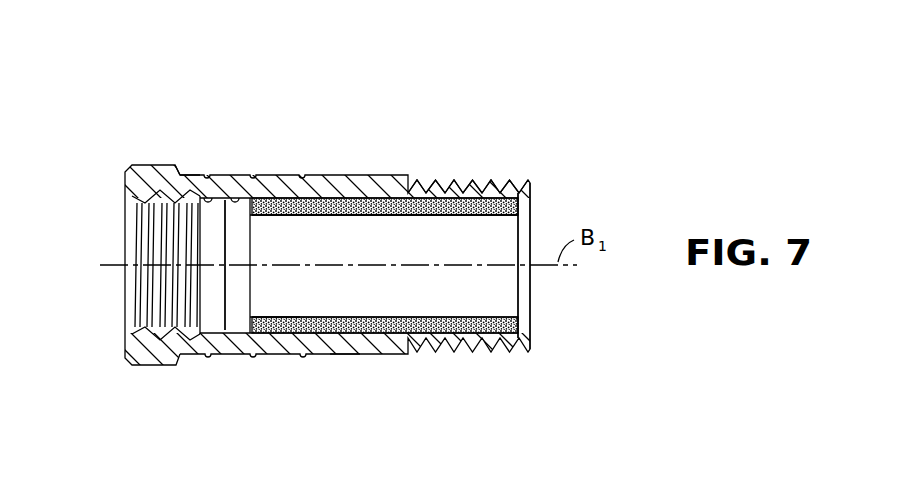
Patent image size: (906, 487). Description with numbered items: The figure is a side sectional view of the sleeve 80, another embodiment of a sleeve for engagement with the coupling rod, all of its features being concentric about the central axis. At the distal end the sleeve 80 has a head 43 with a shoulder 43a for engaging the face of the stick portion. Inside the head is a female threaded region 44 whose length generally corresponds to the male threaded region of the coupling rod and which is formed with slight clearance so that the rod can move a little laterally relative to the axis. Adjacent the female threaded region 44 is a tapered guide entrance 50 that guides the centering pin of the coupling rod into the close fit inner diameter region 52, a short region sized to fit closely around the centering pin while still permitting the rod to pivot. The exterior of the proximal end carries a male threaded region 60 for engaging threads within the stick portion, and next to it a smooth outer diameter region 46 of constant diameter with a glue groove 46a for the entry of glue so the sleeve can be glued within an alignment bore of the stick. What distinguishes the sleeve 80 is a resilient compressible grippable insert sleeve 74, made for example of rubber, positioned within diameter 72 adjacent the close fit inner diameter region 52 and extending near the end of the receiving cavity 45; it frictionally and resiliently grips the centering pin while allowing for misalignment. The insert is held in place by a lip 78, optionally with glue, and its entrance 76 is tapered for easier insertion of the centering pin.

The head 43 is at (150, 165).
The shoulder 43a is at (185, 165).
The female threaded region 44 is at (135, 225).
The receiving cavity 45 is at (108, 278).
The smooth outer diameter region 46 is at (322, 356).
The glue groove 46a is at (344, 356).
The tapered guide entrance 50 is at (228, 205).
The close fit inner diameter region 52 is at (243, 205).
The male threaded region 60 is at (485, 180).
The diameter 72 is at (265, 185).
The grippable insert sleeve 74 is at (282, 352).
The entrance 76 is at (254, 318).
The lip 78 is at (530, 320).
The sleeve 80 is at (437, 112).